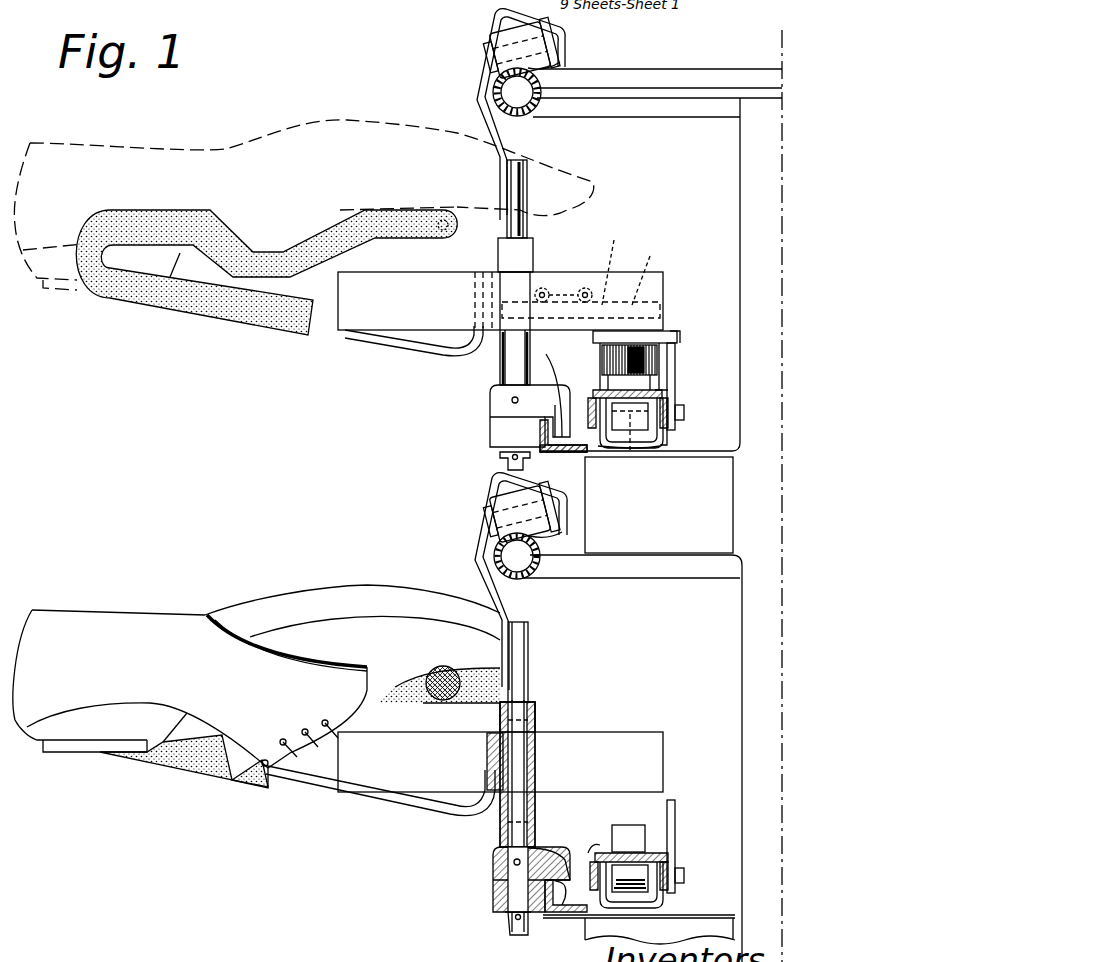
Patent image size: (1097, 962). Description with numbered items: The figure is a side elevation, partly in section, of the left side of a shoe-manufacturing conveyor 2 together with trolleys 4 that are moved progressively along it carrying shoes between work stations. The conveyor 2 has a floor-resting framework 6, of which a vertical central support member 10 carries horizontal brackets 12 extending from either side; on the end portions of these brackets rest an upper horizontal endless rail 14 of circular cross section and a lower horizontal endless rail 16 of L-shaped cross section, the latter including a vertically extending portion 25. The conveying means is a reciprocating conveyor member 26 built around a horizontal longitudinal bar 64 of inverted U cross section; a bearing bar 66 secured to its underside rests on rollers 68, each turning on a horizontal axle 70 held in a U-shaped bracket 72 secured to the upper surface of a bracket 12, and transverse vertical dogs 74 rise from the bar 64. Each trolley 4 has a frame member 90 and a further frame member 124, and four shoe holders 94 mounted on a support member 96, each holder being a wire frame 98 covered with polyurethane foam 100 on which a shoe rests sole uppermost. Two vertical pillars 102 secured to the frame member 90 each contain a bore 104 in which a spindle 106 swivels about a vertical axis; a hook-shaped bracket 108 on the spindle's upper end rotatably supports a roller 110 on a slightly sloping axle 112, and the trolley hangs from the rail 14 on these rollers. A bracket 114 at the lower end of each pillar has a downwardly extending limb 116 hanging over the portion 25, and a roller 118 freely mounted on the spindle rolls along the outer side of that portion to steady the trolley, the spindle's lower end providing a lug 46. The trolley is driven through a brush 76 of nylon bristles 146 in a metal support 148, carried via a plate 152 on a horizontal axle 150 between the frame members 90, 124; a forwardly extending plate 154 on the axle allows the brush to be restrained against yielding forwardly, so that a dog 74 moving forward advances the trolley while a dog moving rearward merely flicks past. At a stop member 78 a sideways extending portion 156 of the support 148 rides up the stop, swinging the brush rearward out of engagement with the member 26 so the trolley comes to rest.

The conveyor 2 is at (675, 46).
The trolley 4 is at (404, 312).
The framework 6 is at (748, 778).
The vertical central support member 10 is at (742, 232).
The horizontal bracket 12 is at (652, 556).
The upper horizontal endless rail 14 is at (534, 105).
The lower horizontal endless rail 16 is at (572, 456).
The vertically extending portion 25 is at (484, 866).
The conveyor member 26 is at (662, 392).
The lug 46 is at (502, 460).
The horizontal longitudinal bar 64 is at (660, 418).
The bearing bar 66 is at (598, 402).
The roller 68 is at (622, 428).
The horizontal axle 70 is at (632, 452).
The U-shaped bracket 72 is at (650, 445).
The transverse vertical dog 74 is at (622, 383).
The brush 76 is at (645, 358).
The stop member 78 is at (668, 382).
The frame member 90 is at (497, 266).
The shoe holder 94 is at (410, 215).
The support member 96 is at (488, 747).
The wire frame 98 is at (435, 336).
The polyurethane foam 100 is at (178, 312).
The vertical pillar 102 is at (506, 372).
The bore 104 is at (524, 818).
The spindle 106 is at (520, 190).
The hook-shaped bracket 108 is at (474, 90).
The roller 110 is at (540, 32).
The axle 112 is at (560, 46).
The bracket 114 is at (550, 412).
The downwardly extending limb 116 is at (560, 402).
The roller 118 is at (496, 434).
The frame member 124 is at (663, 284).
The nylon bristles 146 is at (606, 356).
The metal support 148 is at (648, 338).
The horizontal axle 150 is at (621, 267).
The plate 152 is at (653, 272).
The plate 154 is at (560, 290).
The sideways extending portion 156 is at (680, 337).